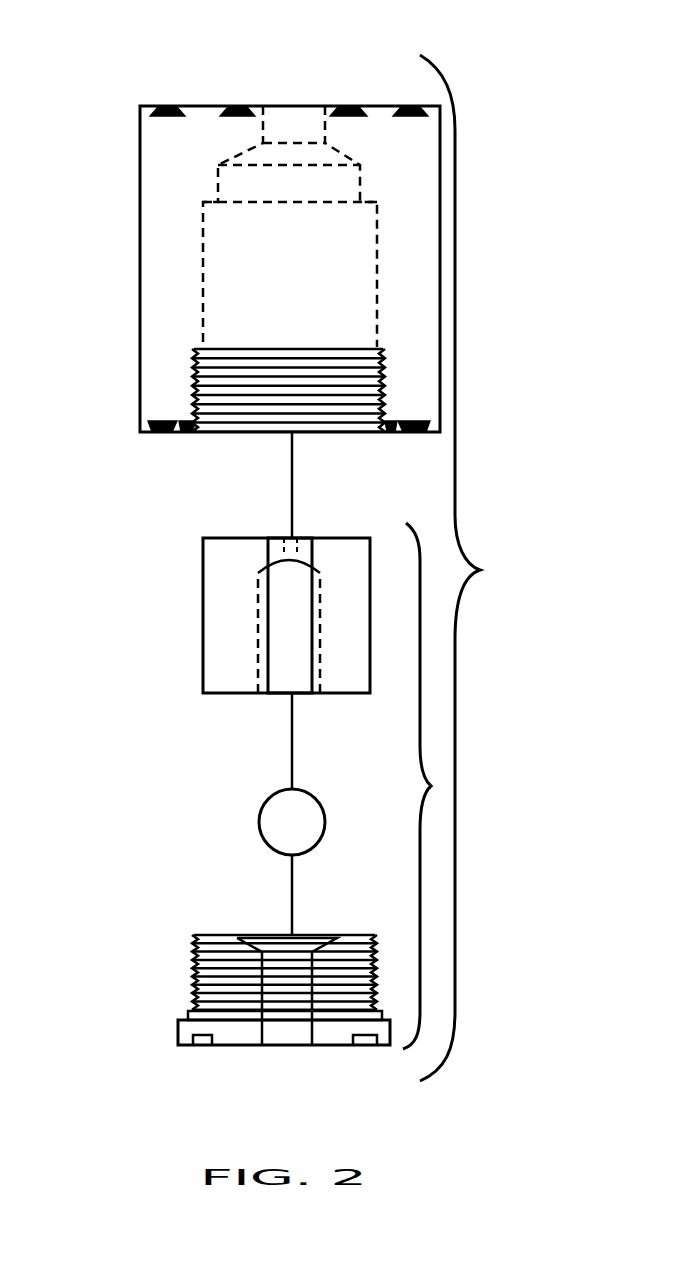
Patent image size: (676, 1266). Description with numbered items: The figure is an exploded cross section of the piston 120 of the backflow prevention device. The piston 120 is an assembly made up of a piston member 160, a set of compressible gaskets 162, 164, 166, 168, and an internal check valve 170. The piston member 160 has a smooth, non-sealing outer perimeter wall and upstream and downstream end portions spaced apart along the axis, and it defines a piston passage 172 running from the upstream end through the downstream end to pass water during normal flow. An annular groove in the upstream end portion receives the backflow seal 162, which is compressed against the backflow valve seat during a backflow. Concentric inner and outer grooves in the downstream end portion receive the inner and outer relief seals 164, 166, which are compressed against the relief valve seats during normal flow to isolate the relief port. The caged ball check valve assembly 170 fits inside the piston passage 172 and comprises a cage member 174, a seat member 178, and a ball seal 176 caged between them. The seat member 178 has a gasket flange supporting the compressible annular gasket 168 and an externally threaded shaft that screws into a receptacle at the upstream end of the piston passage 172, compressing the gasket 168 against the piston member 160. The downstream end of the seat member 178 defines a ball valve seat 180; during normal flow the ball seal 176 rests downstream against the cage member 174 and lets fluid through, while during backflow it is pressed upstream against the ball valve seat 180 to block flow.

The piston 120 is at (480, 570).
The piston member 160 is at (157, 253).
The backflow seal 162 is at (157, 437).
The inner relief seal 164 is at (240, 103).
The outer relief seal 166 is at (166, 103).
The compressible annular gasket 168 is at (185, 437).
The caged ball check valve assembly 170 is at (431, 786).
The piston passage 172 is at (271, 282).
The cage member 174 is at (197, 640).
The ball seal 176 is at (243, 825).
The seat member 178 is at (170, 980).
The ball valve seat 180 is at (260, 935).